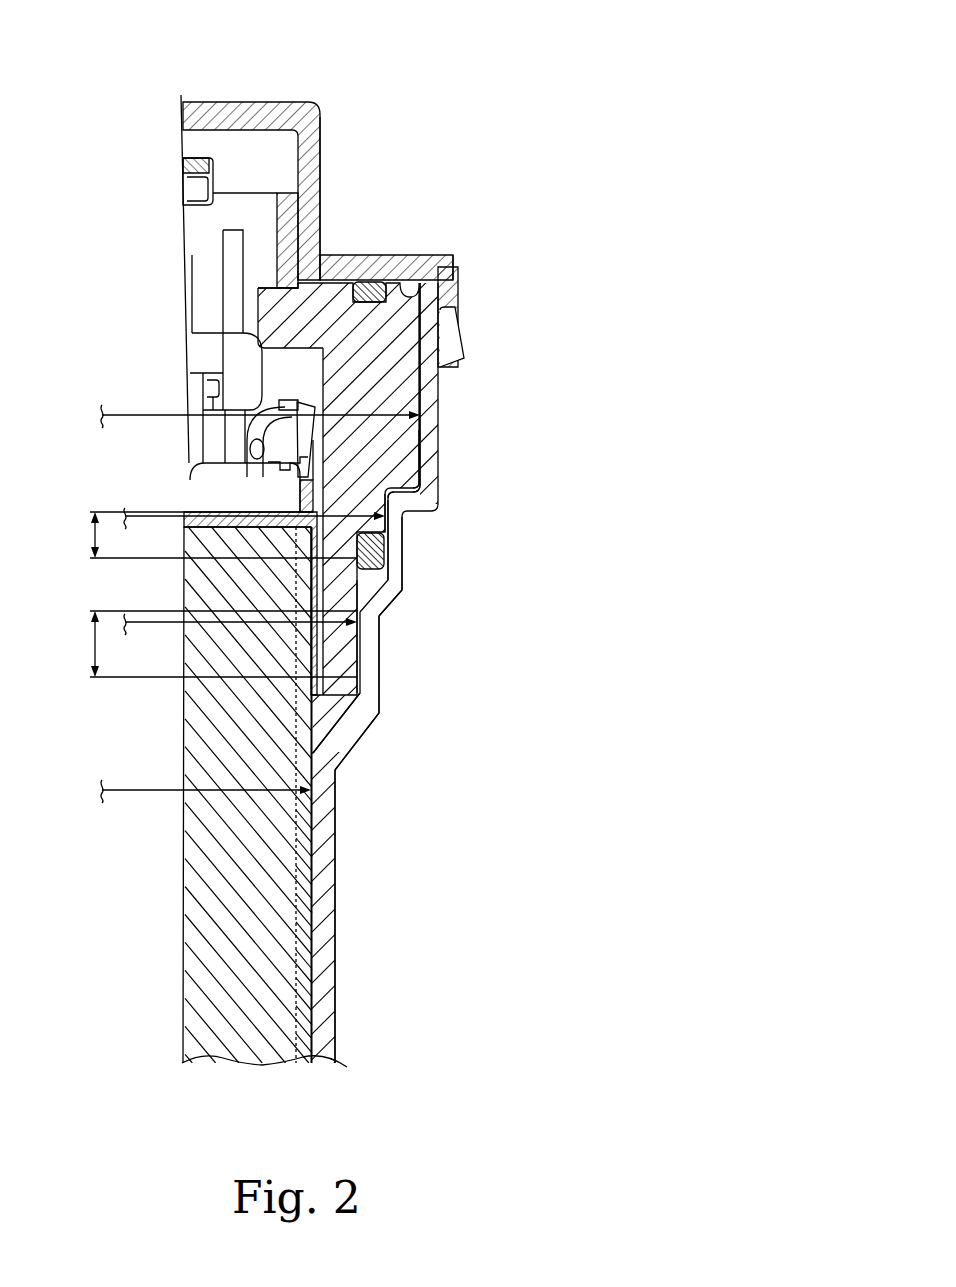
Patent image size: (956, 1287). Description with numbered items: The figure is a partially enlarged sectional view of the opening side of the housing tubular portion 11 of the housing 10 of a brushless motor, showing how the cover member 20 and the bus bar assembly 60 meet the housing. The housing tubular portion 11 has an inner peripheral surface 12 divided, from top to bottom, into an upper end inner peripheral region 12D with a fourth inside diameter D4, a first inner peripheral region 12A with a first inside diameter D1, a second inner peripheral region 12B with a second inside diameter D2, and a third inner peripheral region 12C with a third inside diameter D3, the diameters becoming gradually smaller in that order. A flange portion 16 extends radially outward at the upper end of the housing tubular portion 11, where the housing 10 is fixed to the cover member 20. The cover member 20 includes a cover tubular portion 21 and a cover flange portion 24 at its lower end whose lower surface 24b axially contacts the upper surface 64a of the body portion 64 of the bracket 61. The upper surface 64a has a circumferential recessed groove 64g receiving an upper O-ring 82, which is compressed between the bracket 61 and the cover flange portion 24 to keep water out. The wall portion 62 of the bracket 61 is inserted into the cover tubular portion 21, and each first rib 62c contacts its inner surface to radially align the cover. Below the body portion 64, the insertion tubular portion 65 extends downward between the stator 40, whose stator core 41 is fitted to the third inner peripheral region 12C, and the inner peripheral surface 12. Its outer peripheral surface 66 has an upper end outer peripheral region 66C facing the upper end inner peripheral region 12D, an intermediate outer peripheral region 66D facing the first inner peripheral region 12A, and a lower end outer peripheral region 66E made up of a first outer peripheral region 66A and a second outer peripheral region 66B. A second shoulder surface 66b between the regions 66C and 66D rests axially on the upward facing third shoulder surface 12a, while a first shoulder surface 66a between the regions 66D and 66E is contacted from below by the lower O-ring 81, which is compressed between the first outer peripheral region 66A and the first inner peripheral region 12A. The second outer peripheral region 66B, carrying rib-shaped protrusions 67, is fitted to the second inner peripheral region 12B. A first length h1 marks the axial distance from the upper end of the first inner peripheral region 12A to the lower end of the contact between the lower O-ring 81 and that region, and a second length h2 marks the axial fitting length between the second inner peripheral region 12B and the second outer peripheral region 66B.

The housing 10 is at (339, 919).
The housing tubular portion 11 is at (337, 892).
The inner peripheral surface 12 is at (311, 853).
The first inner peripheral region 12A is at (373, 530).
The second inner peripheral region 12B is at (355, 645).
The third inner peripheral region 12C is at (312, 805).
The upper end inner peripheral region 12D is at (424, 447).
The third shoulder surface 12a is at (415, 481).
The flange portion 16 is at (441, 290).
The cover member 20 is at (310, 100).
The cover tubular portion 21 is at (313, 152).
The cover flange portion 24 is at (425, 266).
The lower surface 24b is at (435, 273).
The stator 40 is at (274, 386).
The stator core 41 is at (210, 953).
The bus bar assembly 60 is at (253, 152).
The bracket 61 is at (237, 178).
The wall portion 62 is at (273, 215).
The first rib 62c is at (300, 256).
The body portion 64 is at (411, 325).
The upper surface 64a is at (358, 297).
The recessed groove 64g is at (420, 320).
The insertion tubular portion 65 is at (347, 705).
The outer peripheral surface 66 is at (356, 697).
The first outer peripheral region 66A is at (396, 578).
The second outer peripheral region 66B is at (386, 618).
The upper end outer peripheral region 66C is at (421, 400).
The intermediate outer peripheral region 66D is at (391, 503).
The lower end outer peripheral region 66E is at (628, 620).
The first shoulder surface 66a is at (385, 555).
The second shoulder surface 66b is at (404, 493).
The protrusion 67 is at (370, 679).
The lower O-ring 81 is at (378, 562).
The upper O-ring 82 is at (277, 286).
The first inside diameter D1 is at (138, 514).
The second inside diameter D2 is at (138, 621).
The third inside diameter D3 is at (131, 788).
The fourth inside diameter D4 is at (145, 413).
The first length h1 is at (208, 535).
The second length h2 is at (208, 644).